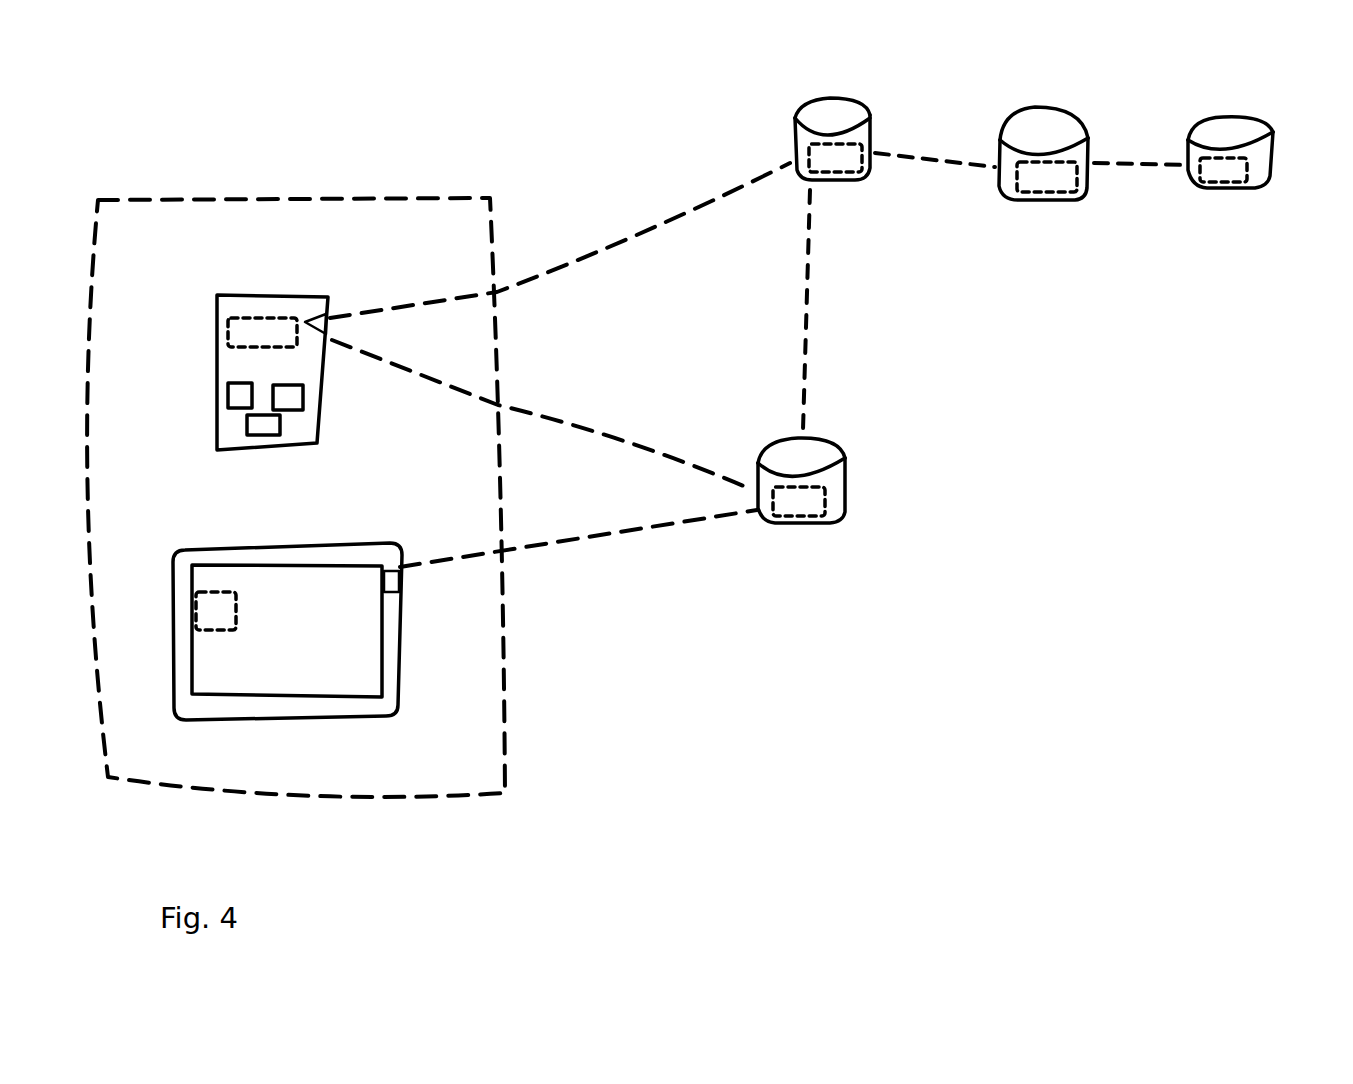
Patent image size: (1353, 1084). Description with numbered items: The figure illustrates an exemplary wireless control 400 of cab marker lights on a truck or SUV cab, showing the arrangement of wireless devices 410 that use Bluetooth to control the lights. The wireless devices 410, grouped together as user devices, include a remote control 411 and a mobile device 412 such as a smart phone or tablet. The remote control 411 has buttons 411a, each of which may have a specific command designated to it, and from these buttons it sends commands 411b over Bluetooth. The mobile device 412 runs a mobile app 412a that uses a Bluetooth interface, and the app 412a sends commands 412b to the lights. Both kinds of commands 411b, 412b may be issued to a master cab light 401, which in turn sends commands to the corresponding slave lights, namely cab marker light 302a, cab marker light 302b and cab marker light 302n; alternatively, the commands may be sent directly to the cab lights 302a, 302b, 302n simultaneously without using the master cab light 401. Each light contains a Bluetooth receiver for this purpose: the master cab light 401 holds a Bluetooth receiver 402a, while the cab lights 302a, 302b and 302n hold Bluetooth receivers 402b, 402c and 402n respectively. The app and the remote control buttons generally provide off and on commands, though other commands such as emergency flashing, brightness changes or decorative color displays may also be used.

The wireless control 400 is at (757, 857).
The wireless devices 410 is at (505, 693).
The remote control 411 is at (327, 365).
The buttons 411a is at (287, 433).
The commands 411b is at (260, 322).
The mobile device 412 is at (332, 718).
The mobile app 412a is at (211, 633).
The commands 412b is at (400, 577).
The master cab light 401 is at (845, 463).
The Bluetooth receiver 402a is at (820, 518).
The cab marker light 302a is at (857, 107).
The Bluetooth receiver 402b is at (843, 181).
The cab marker light 302b is at (1058, 108).
The Bluetooth receiver 402c is at (1045, 200).
The cab marker light 302n is at (1228, 108).
The Bluetooth receiver 402n is at (1217, 189).